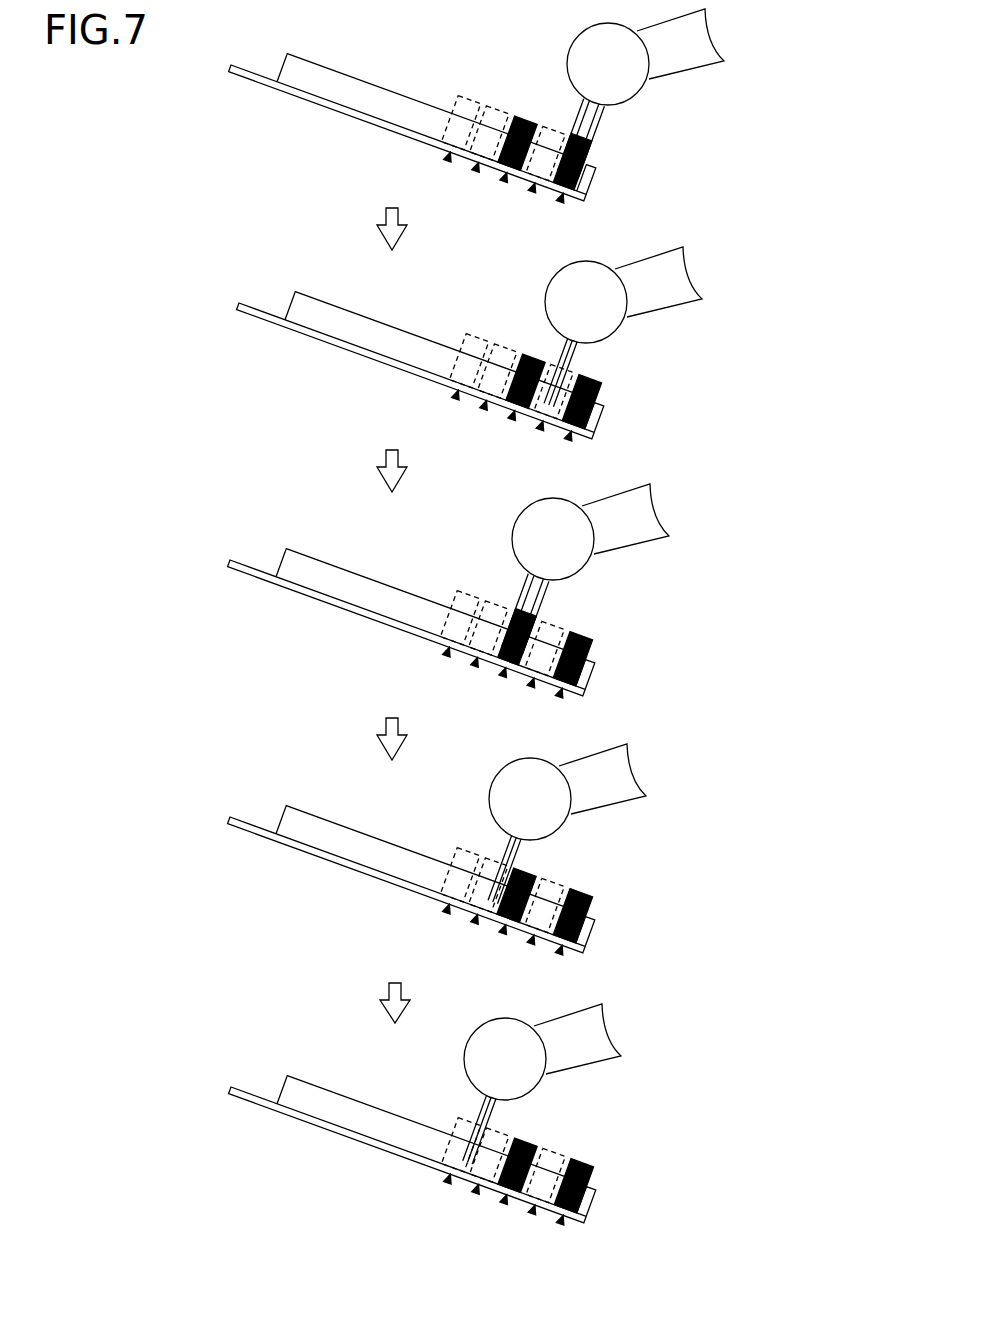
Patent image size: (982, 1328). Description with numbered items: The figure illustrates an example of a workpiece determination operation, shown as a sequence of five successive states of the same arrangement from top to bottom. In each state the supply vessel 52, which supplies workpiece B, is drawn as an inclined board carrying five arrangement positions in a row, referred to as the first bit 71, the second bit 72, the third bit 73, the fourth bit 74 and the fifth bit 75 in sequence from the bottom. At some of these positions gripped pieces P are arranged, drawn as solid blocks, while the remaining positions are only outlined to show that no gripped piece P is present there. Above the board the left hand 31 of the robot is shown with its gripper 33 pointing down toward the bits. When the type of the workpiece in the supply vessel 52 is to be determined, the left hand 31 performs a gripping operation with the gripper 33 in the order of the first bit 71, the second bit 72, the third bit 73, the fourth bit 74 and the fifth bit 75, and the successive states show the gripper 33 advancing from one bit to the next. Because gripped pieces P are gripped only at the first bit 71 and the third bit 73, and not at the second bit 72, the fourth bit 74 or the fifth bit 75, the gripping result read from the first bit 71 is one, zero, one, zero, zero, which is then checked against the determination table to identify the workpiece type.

The left hand 31 is at (684, 62).
The gripper 33 is at (618, 128).
The supply vessel 52 is at (246, 68).
The first bit 71 is at (560, 202).
The second bit 72 is at (532, 192).
The third bit 73 is at (504, 181).
The fourth bit 74 is at (476, 171).
The fifth bit 75 is at (447, 161).
The gripped piece P is at (530, 118).